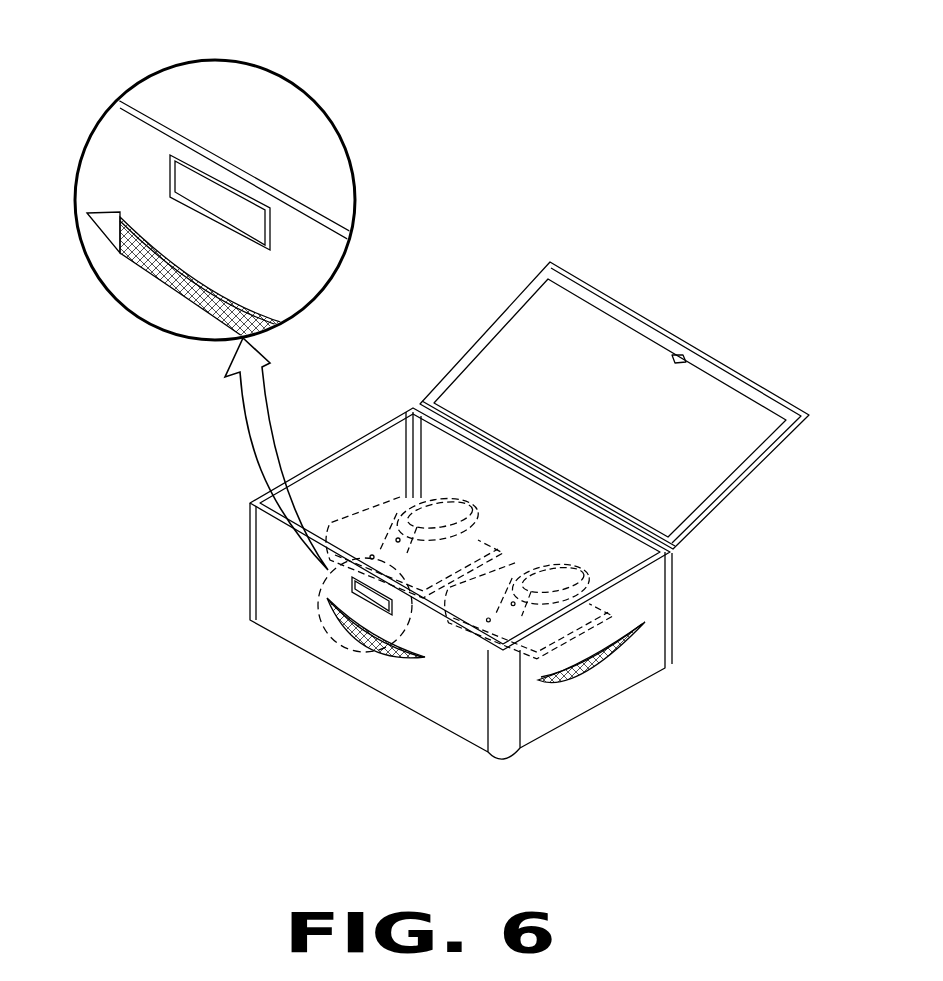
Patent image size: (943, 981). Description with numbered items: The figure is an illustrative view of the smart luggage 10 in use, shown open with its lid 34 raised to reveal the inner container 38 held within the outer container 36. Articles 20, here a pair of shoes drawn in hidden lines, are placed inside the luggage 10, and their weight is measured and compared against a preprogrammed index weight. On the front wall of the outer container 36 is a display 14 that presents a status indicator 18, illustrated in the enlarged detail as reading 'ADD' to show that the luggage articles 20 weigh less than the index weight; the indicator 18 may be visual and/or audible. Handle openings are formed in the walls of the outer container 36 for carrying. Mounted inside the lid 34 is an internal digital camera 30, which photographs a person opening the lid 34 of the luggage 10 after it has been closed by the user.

The smart luggage 10 is at (102, 99).
The display 14 is at (187, 167).
The status indicator 18 is at (240, 207).
The articles 20 is at (570, 560).
The internal digital camera 30 is at (684, 356).
The lid 34 is at (522, 338).
The outer container 36 is at (145, 302).
The inner container 38 is at (375, 462).